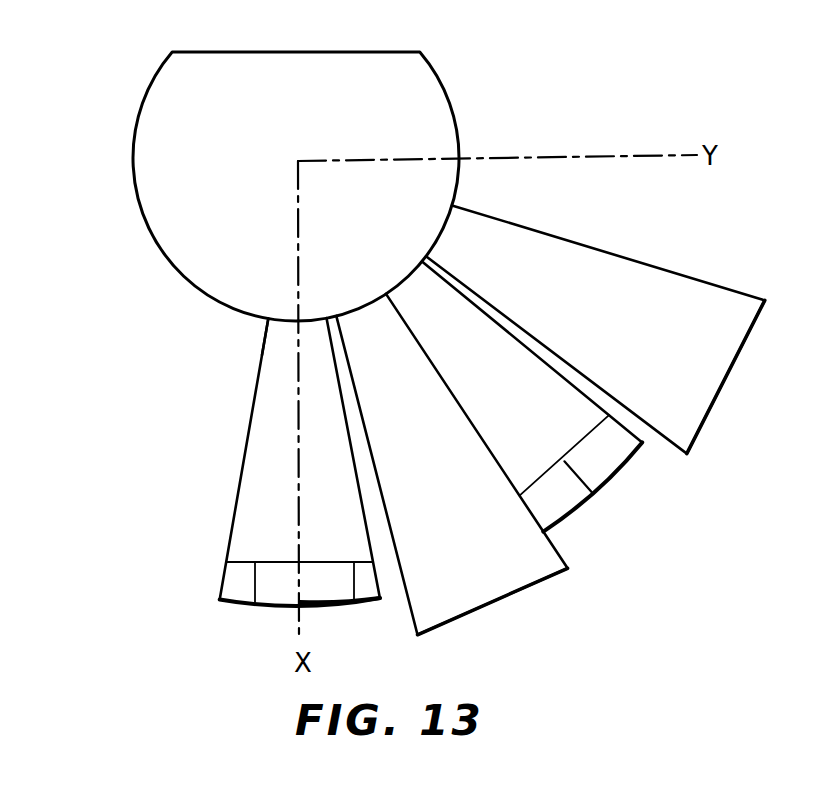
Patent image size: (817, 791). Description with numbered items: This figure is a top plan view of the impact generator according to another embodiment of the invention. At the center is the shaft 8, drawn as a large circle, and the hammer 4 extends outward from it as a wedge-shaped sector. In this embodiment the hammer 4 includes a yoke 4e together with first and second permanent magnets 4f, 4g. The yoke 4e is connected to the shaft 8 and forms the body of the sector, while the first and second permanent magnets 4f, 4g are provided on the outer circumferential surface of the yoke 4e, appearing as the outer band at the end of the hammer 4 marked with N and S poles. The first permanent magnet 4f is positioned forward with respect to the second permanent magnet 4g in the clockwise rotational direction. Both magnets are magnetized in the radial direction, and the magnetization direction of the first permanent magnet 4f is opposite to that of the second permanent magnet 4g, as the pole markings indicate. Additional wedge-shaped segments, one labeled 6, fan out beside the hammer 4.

The shaft 8 is at (160, 107).
The hammer 4 is at (272, 503).
The yoke 4e is at (267, 347).
The first permanent magnet 4f is at (228, 578).
The second permanent magnet 4g is at (362, 604).
The segment 6 is at (488, 588).